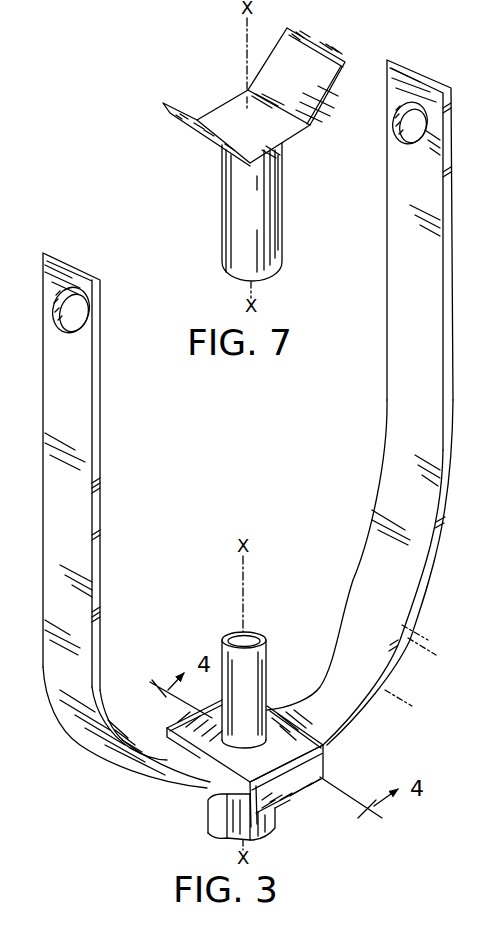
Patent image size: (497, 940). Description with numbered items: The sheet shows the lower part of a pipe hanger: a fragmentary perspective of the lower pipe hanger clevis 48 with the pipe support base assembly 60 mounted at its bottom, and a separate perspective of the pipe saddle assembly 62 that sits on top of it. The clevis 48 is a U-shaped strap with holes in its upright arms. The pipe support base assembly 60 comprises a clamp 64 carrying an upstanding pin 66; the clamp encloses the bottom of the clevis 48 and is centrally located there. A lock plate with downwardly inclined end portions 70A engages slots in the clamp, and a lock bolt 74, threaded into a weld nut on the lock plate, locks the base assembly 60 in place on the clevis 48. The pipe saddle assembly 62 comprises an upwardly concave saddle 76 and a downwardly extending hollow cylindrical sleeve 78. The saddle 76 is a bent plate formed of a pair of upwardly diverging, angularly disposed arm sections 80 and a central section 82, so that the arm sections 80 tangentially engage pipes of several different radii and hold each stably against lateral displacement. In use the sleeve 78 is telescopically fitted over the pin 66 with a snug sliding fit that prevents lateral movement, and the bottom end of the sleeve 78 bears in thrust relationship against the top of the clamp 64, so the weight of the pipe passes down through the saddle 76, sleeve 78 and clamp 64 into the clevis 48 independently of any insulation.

In FIG. 3, the lower pipe hanger clevis 48 is at (405, 418).
In FIG. 3, the pipe support base assembly 60 is at (274, 655).
In FIG. 7, the pipe saddle assembly 62 is at (217, 214).
In FIG. 3, the clamp 64 is at (288, 702).
In FIG. 3, the upstanding pin 66 is at (224, 652).
In FIG. 3, the downwardly inclined end portions 70A is at (326, 776).
In FIG. 3, the lock bolt 74 is at (217, 800).
In FIG. 7, the saddle 76 is at (227, 98).
In FIG. 7, the sleeve 78 is at (264, 221).
In FIG. 7, the arm sections 80 is at (308, 81).
In FIG. 7, the central section 82 is at (262, 137).